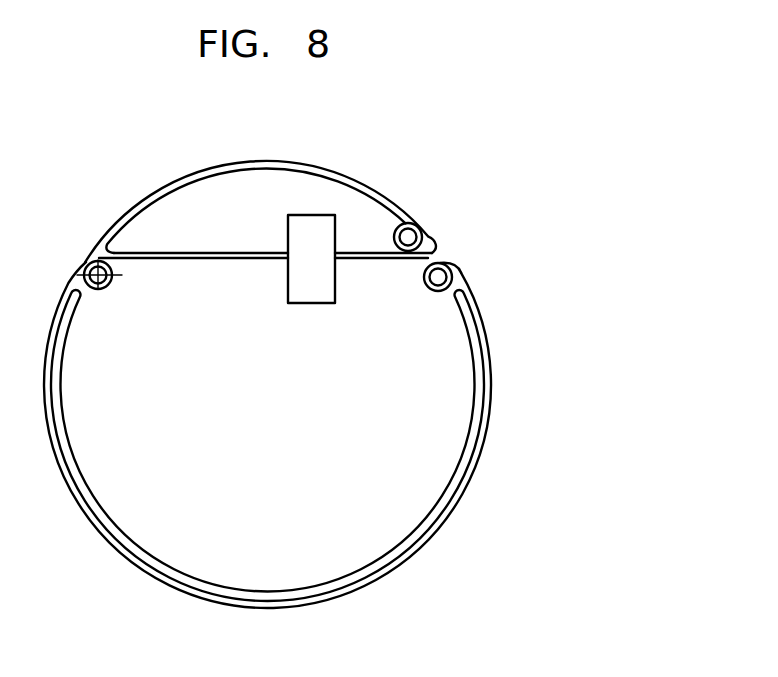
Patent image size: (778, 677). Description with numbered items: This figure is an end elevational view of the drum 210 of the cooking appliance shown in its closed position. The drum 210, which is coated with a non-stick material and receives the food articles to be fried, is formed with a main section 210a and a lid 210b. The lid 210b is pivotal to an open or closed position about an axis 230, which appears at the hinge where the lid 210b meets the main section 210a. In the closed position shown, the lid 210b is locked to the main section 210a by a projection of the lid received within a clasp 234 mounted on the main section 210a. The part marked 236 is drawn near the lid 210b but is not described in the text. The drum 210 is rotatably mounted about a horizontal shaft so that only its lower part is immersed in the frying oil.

The drum 210 is at (332, 383).
The main section 210a is at (495, 356).
The lid 210b is at (373, 187).
The axis 230 is at (91, 292).
The clasp 234 is at (312, 291).
The partition bar 236 is at (200, 187).